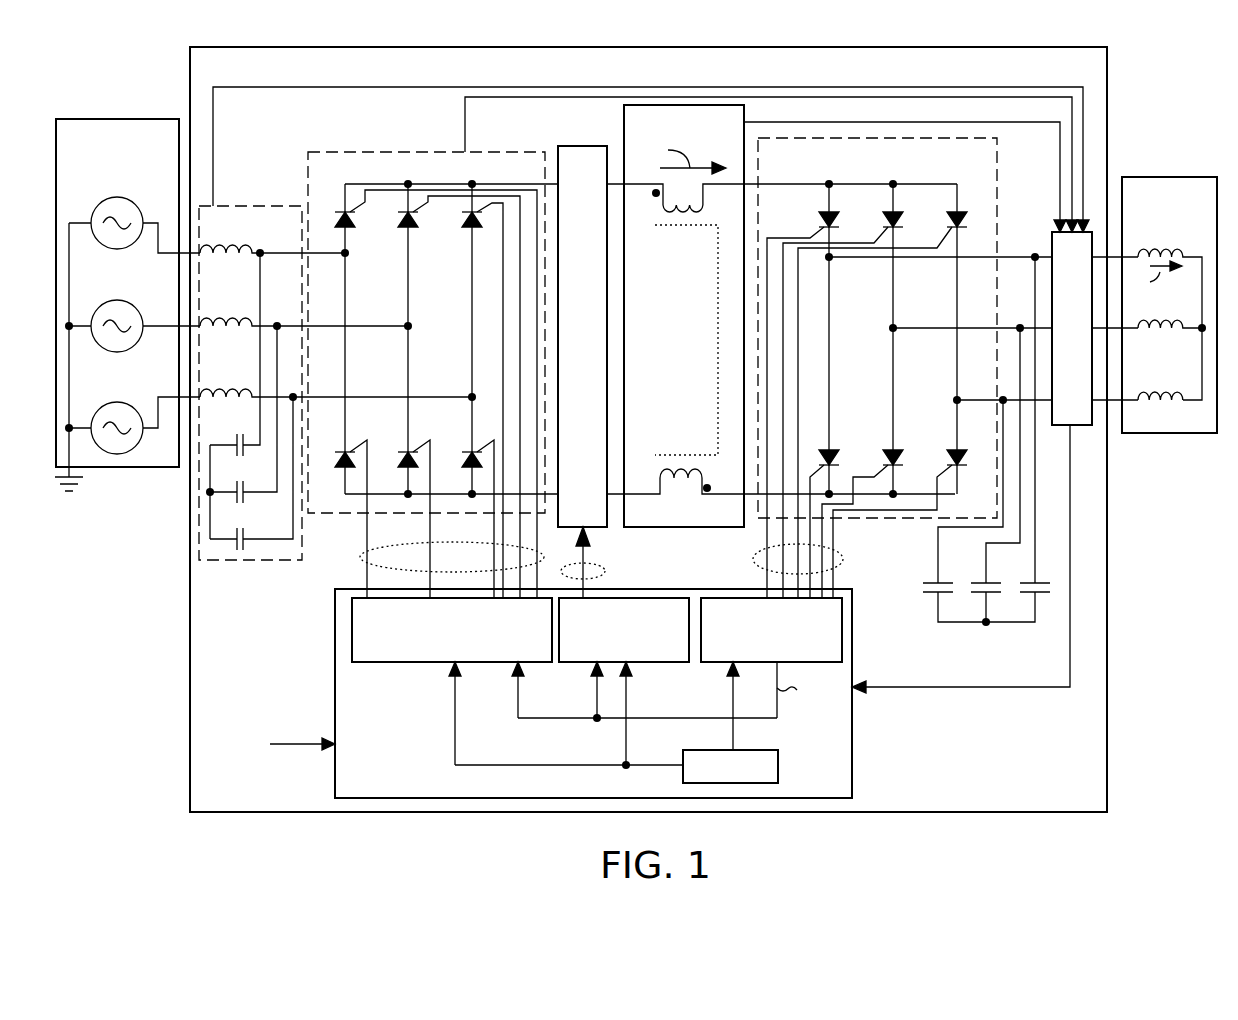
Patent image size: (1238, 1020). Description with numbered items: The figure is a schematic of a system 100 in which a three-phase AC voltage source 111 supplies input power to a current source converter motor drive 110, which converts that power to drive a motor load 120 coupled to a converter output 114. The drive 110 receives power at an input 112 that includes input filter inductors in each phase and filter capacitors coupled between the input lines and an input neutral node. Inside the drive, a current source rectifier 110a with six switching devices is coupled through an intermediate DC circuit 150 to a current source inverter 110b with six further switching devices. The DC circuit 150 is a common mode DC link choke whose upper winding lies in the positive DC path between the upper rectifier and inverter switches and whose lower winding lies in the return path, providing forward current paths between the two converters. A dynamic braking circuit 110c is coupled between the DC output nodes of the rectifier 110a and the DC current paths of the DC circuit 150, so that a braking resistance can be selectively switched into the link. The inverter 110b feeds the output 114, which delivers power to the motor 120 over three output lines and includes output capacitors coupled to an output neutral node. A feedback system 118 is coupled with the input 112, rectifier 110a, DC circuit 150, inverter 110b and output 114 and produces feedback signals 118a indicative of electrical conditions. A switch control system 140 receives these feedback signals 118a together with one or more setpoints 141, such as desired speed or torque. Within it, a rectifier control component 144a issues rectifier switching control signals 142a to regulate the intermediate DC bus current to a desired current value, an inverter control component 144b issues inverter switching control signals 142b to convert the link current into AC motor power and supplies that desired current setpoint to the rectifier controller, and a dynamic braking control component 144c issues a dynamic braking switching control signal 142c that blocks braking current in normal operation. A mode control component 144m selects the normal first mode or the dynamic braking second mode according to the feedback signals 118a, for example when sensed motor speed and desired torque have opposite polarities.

The system 100 is at (130, 76).
The motor drive 110 is at (190, 67).
The AC voltage source 111 is at (110, 119).
The input 112 is at (240, 206).
The rectifier 110a is at (328, 152).
The inverter 110b is at (997, 156).
The dynamic braking circuit 110c is at (560, 146).
The intermediate DC circuit 150 is at (624, 122).
The feedback system 118 is at (1052, 237).
The feedback signals 118a is at (978, 687).
The converter output 114 is at (1118, 447).
The motor load 120 is at (1166, 177).
The switch control system 140 is at (335, 775).
The setpoints 141 is at (300, 744).
The rectifier switching control signals 142a is at (360, 556).
The inverter switching control signals 142b is at (843, 560).
The dynamic braking switching control signal 142c is at (604, 572).
The rectifier control component 144a is at (352, 630).
The inverter control component 144b is at (852, 632).
The dynamic braking control component 144c is at (678, 598).
The mode control component 144m is at (778, 768).